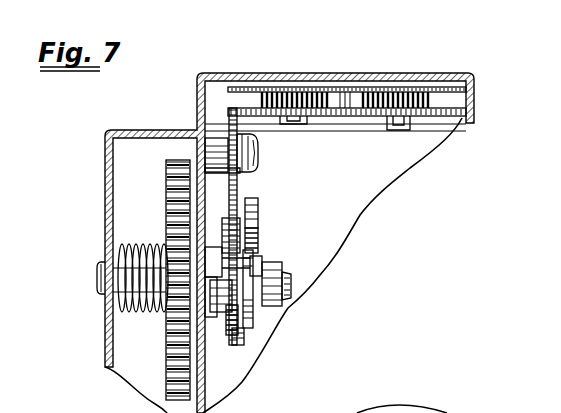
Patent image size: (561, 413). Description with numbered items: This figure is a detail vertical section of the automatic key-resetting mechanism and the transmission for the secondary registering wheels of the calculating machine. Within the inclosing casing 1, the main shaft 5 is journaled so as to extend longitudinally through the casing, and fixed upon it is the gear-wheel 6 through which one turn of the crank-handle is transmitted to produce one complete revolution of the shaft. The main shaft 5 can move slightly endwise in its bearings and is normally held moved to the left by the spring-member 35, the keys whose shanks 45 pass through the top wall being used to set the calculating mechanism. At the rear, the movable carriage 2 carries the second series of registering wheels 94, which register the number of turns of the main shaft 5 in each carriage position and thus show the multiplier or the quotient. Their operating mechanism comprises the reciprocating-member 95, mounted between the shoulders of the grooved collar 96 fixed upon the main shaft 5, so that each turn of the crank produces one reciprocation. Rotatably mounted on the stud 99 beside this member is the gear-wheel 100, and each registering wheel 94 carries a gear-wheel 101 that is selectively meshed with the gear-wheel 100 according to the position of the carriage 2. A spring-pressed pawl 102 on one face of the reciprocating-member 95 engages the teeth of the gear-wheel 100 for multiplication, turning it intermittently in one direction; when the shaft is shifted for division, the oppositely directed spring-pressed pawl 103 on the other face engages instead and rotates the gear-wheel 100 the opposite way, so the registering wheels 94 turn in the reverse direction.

The inclosing casing 1 is at (205, 383).
The movable carriage 2 is at (249, 73).
The main shaft 5 is at (97, 278).
The gear-wheel 6 is at (166, 210).
The spring-member 35 is at (128, 313).
The key shanks 45 is at (240, 345).
The secondary registering wheels 94 is at (368, 84).
The reciprocating-member 95 is at (258, 244).
The grooved collar 96 is at (230, 316).
The stud 99 is at (215, 158).
The gear-wheel 100 is at (239, 192).
The gear-wheels 101 is at (321, 117).
The spring-pressed pawl 102 is at (228, 226).
The spring-pressed pawl 103 is at (258, 209).